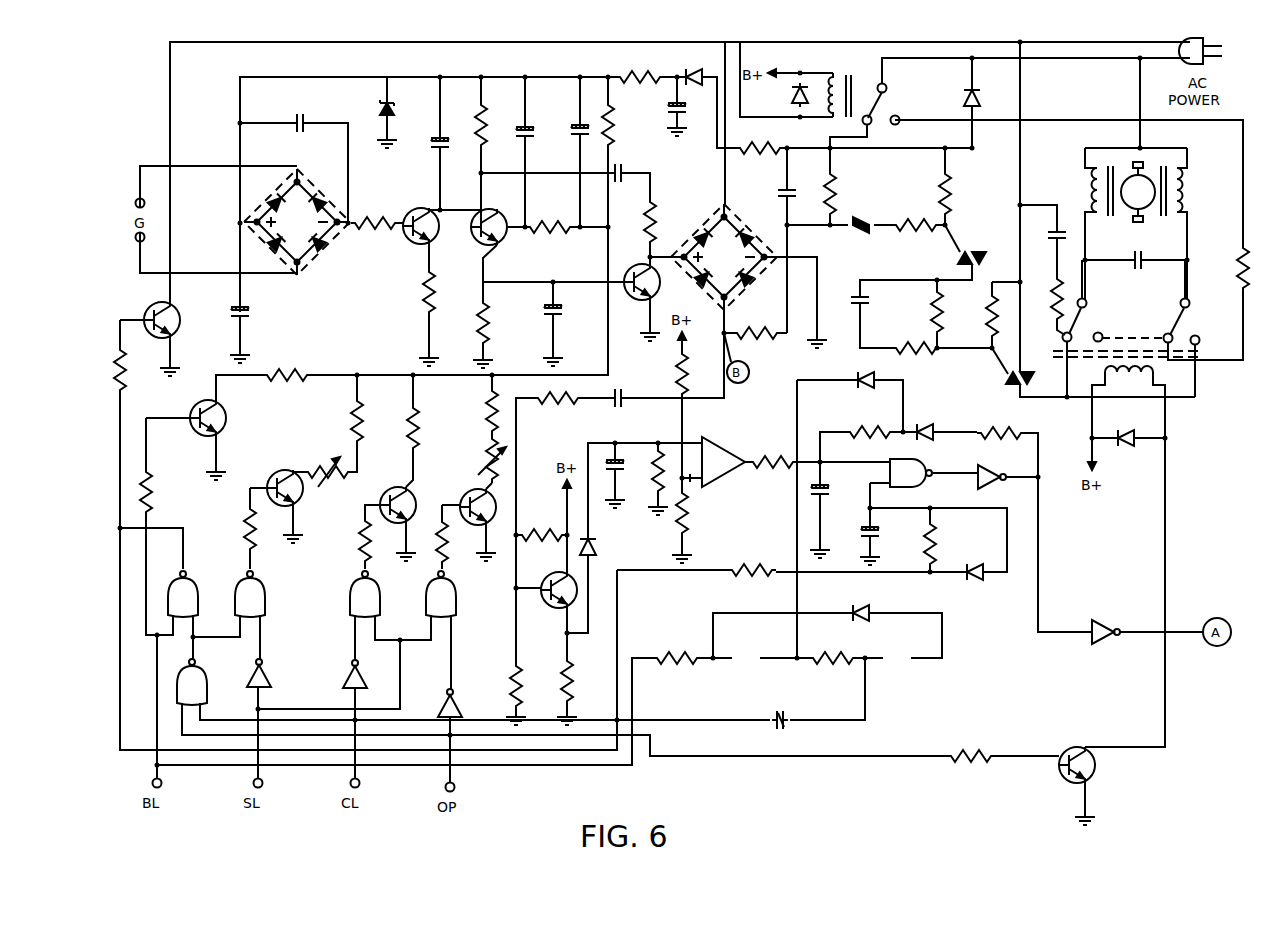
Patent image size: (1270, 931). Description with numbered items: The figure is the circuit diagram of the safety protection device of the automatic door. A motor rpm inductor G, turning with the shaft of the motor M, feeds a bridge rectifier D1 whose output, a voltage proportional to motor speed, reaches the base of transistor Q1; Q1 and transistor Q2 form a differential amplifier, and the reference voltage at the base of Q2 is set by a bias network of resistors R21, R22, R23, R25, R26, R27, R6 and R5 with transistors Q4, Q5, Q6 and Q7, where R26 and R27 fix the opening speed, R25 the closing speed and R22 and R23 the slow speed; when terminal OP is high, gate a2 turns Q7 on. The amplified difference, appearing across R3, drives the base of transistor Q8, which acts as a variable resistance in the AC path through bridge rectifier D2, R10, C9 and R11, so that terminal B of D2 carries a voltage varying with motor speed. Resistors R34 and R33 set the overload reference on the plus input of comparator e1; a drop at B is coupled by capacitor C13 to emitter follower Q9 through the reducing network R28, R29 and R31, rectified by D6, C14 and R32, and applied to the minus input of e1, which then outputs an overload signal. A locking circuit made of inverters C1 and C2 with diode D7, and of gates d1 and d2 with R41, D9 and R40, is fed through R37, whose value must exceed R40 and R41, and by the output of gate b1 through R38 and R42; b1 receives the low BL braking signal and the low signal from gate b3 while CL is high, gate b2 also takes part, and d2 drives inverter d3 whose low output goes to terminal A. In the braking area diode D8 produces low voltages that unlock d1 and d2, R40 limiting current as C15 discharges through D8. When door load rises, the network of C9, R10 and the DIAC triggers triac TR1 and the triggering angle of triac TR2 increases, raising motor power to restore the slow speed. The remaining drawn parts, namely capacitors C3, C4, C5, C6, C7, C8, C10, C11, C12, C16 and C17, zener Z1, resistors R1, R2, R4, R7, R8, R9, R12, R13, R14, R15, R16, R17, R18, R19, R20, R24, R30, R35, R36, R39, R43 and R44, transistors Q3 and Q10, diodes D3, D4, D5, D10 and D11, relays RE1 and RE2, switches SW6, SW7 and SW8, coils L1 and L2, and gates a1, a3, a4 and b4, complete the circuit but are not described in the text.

The bridge rectifier D1 is at (297, 222).
The bridge rectifier D2 is at (724, 257).
The IC c1 C1 is at (249, 329).
The IC c2 C2 is at (294, 158).
The capacitor C3 is at (433, 136).
The capacitor C4 is at (564, 316).
The capacitor C5 is at (531, 141).
The capacitor C6 is at (574, 125).
The capacitor C7 is at (623, 183).
The capacitor C8 is at (685, 113).
The capacitor C9 is at (775, 195).
The capacitor C10 is at (845, 304).
The capacitor C11 is at (1045, 237).
The capacitor C12 is at (1140, 270).
The capacitor C13 is at (626, 408).
The capacitor C14 is at (607, 474).
The capacitor C15 is at (831, 498).
The capacitor C16 is at (884, 528).
The capacitor C17 is at (786, 729).
The zener diode Z1 is at (375, 109).
The resistor R1 is at (377, 214).
The resistor R2 is at (414, 293).
The resistor R3 is at (493, 323).
The resistor R4 is at (491, 125).
The resistor R5 is at (550, 220).
The resistor R6 is at (619, 125).
The resistor R7 is at (640, 70).
The resistor R8 is at (760, 156).
The resistor R9 is at (661, 222).
The resistor R10 is at (757, 343).
The resistor R11 is at (844, 194).
The resistor R12 is at (916, 219).
The resistor R13 is at (930, 194).
The resistor R14 is at (916, 359).
The resistor R15 is at (919, 312).
The resistor R16 is at (984, 316).
The resistor R17 is at (1050, 299).
The resistor R18 is at (137, 375).
The resistor R19 is at (162, 492).
The resistor R20 is at (231, 529).
The resistor R21 is at (287, 366).
The resistor R22 is at (337, 421).
The resistor R23 is at (328, 476).
The resistor R24 is at (346, 541).
The resistor R25 is at (404, 428).
The resistor R26 is at (477, 459).
The resistor R27 is at (474, 411).
The resistor R28 is at (558, 408).
The resistor R29 is at (495, 686).
The resistor R30 is at (581, 681).
The resistor R31 is at (542, 526).
The resistor R32 is at (648, 471).
The resistor R33 is at (695, 514).
The resistor R34 is at (664, 374).
The resistor R35 is at (677, 650).
The resistor R36 is at (971, 749).
The resistor R37 is at (773, 454).
The resistor R38 is at (752, 562).
The resistor R39 is at (833, 649).
The resistor R40 is at (870, 440).
The resistor R41 is at (1001, 424).
The resistor R42 is at (945, 544).
The resistor R43 is at (1222, 268).
The resistor R44 is at (451, 542).
The transistor Q1 is at (428, 230).
The transistor Q2 is at (496, 234).
The transistor Q3 is at (170, 322).
The transistor Q4 is at (219, 418).
The transistor Q5 is at (285, 480).
The transistor Q6 is at (406, 502).
The transistor Q7 is at (485, 513).
The transistor Q8 is at (638, 290).
The transistor Q9 is at (557, 598).
The transistor Q10 is at (1093, 765).
The diode D3 is at (699, 71).
The diode D4 is at (787, 95).
The diode D5 is at (984, 98).
The diode D6 is at (600, 547).
The diode D7 is at (862, 605).
The diode D8 is at (867, 391).
The diode D9 is at (926, 426).
The diode D10 is at (982, 583).
The diode D11 is at (1131, 448).
The relay coil RE1 is at (829, 84).
The relay coil RE2 is at (1129, 379).
The switch SW6 is at (893, 104).
The switch SW7 is at (1089, 320).
The switch SW8 is at (1190, 322).
The diac DIAC is at (856, 239).
The triac TR1 is at (978, 240).
The triac TR2 is at (1000, 381).
The motor field coil L1 is at (1094, 191).
The motor field coil L2 is at (1182, 191).
The motor M is at (1138, 192).
The IC voltage comparator e1 is at (715, 466).
The IC d1 is at (917, 480).
The IC d2 is at (994, 484).
The IC d3 is at (1105, 644).
The NOR gate a1 is at (374, 594).
The IC a2 is at (450, 594).
The inverter a3 is at (361, 685).
The inverter a4 is at (455, 713).
The IC b1 is at (172, 594).
The IC b2 is at (260, 594).
The IC b3 is at (200, 682).
The inverter b4 is at (267, 673).